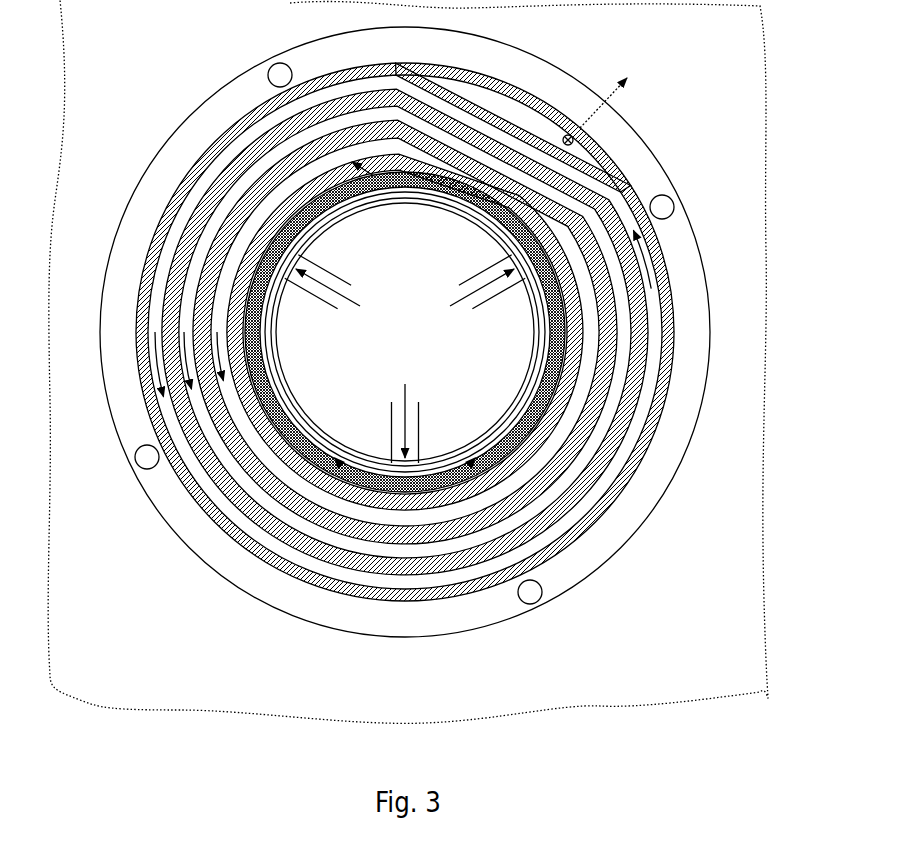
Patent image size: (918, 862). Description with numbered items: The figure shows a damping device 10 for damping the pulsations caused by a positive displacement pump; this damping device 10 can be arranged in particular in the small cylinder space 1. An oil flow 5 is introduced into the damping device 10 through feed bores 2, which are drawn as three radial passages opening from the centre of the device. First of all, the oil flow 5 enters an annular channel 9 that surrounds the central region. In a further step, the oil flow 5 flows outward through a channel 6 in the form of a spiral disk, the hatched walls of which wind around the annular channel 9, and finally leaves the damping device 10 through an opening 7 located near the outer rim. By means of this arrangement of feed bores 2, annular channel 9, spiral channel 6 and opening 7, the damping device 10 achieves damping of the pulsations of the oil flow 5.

The small cylinder space 1 is at (129, 608).
The feed bores 2 is at (389, 430).
The oil flow 5 is at (419, 412).
The channel 6 is at (203, 247).
The opening 7 is at (588, 163).
The annular channel 9 is at (272, 392).
The damping device 10 is at (607, 510).